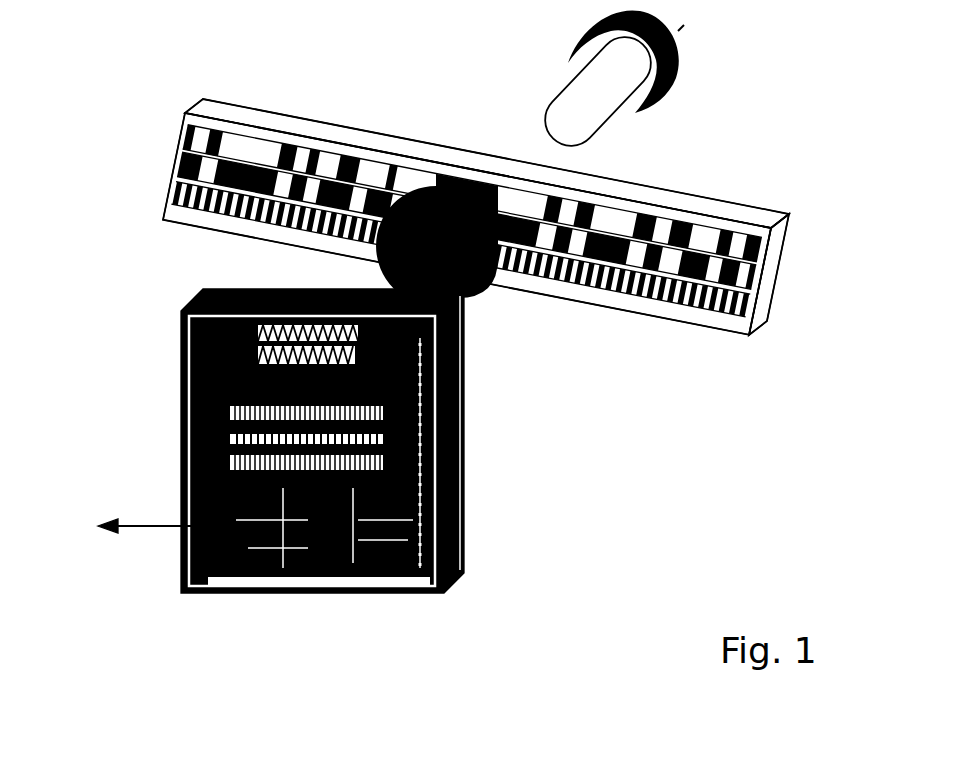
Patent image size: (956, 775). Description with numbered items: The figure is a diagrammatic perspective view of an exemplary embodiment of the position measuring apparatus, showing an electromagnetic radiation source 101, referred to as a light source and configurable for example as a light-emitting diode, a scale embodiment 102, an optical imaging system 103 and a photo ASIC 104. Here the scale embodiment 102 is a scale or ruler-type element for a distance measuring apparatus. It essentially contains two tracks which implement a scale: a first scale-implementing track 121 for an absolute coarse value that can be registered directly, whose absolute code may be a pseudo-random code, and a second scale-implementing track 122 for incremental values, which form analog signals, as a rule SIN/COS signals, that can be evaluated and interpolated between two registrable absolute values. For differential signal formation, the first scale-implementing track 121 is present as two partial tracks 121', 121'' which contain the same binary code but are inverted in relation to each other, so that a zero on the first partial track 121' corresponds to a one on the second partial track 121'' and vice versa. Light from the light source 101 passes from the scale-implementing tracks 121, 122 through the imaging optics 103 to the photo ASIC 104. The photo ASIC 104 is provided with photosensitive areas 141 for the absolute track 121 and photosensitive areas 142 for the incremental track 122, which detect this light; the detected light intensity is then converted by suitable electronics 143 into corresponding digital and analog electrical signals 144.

The electromagnetic radiation source 101 is at (576, 73).
The scale embodiment 102 is at (476, 185).
The optical imaging system 103 is at (477, 283).
The photo ASIC 104 is at (328, 479).
The first scale-implementing track 121 is at (476, 214).
The first partial track 121' is at (538, 197).
The second partial track 121'' is at (537, 231).
The second scale-implementing track 122 is at (165, 185).
The photosensitive areas 141 is at (182, 430).
The photosensitive areas 142 is at (182, 328).
The electronics 143 is at (300, 571).
The digital and analog electrical signals 144 is at (122, 521).